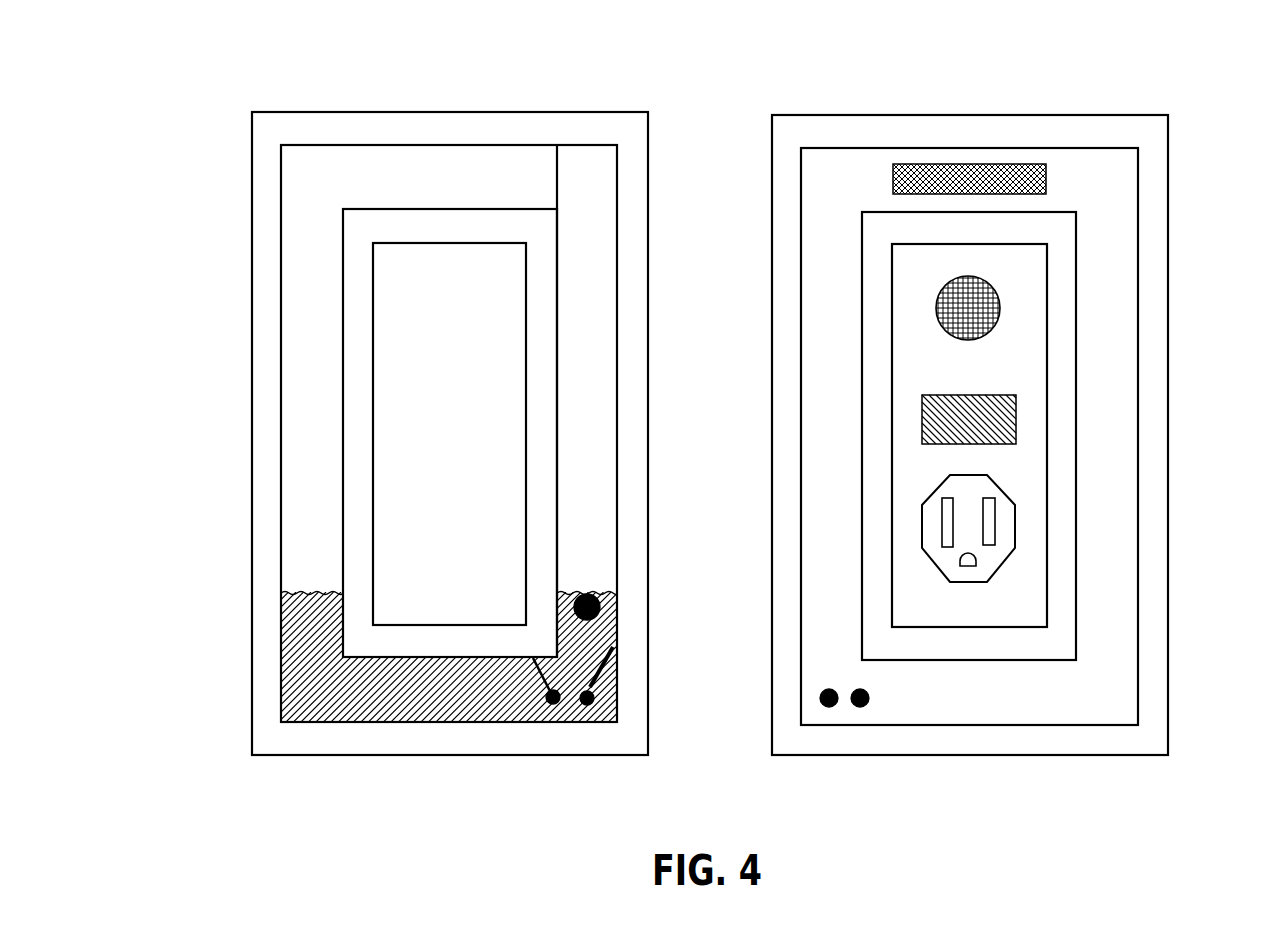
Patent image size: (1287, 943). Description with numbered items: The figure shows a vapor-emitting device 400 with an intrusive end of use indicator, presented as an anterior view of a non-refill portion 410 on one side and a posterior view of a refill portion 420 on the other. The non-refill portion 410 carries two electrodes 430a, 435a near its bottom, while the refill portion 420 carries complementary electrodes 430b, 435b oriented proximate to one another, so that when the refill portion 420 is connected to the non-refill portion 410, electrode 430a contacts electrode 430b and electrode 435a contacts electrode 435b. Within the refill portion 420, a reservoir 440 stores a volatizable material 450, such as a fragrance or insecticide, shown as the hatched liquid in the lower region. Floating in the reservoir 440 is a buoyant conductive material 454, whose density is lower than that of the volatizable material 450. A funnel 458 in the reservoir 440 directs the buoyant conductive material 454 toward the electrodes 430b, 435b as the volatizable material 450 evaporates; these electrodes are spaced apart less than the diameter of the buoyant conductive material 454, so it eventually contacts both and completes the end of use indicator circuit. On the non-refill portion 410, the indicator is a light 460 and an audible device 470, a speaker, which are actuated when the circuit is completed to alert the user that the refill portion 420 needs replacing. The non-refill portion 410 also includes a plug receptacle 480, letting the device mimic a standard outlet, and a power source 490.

The vapor-emitting device 400 is at (210, 107).
The non-refill portion 410 is at (962, 115).
The refill portion 420 is at (443, 112).
The electrode 430a is at (865, 706).
The electrode 430b is at (548, 704).
The electrode 435a is at (825, 706).
The electrode 435b is at (592, 704).
The reservoir 440 is at (280, 312).
The volatizable material 450 is at (307, 480).
The buoyant conductive material 454 is at (600, 600).
The funnel 458 is at (613, 670).
The light 460 is at (1016, 420).
The audible device 470 is at (1000, 301).
The plug receptacle 480 is at (1013, 523).
The power source 490 is at (940, 182).